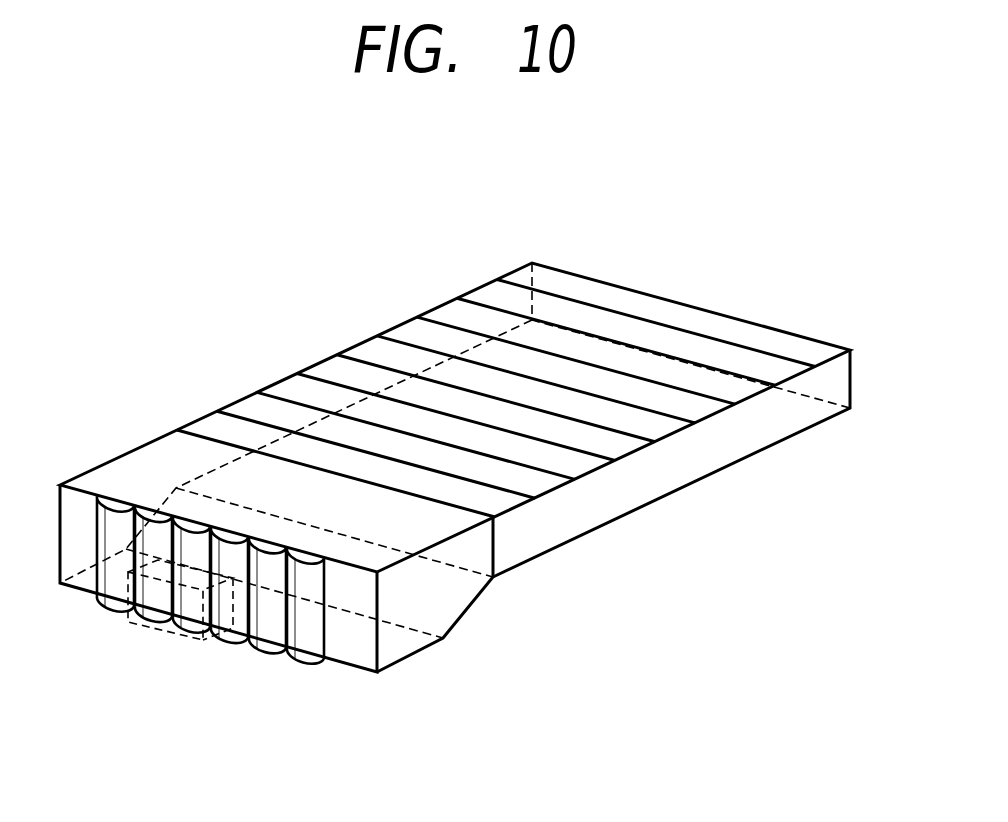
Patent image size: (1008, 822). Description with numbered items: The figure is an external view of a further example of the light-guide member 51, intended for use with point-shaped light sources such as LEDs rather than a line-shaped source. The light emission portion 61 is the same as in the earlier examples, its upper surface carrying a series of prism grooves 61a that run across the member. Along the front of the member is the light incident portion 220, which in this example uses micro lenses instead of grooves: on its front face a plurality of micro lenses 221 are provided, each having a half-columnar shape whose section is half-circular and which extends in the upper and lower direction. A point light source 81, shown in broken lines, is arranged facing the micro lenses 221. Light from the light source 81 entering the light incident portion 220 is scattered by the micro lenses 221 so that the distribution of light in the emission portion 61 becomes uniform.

The light-guide member 51 is at (732, 283).
The light emission portion 61 is at (737, 448).
The prism grooves 61a is at (317, 378).
The point light source 81 is at (170, 633).
The light incident portion 220 is at (432, 660).
The micro lenses 221 is at (113, 612).